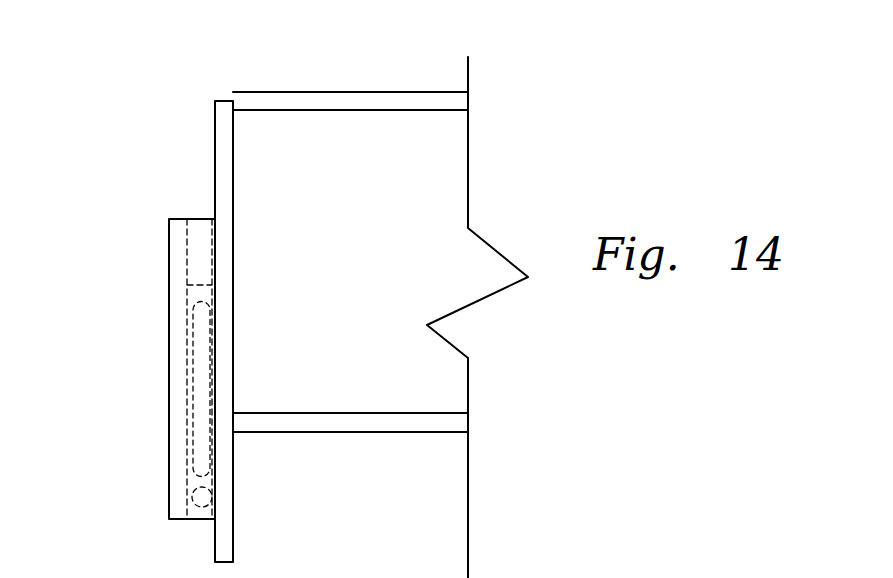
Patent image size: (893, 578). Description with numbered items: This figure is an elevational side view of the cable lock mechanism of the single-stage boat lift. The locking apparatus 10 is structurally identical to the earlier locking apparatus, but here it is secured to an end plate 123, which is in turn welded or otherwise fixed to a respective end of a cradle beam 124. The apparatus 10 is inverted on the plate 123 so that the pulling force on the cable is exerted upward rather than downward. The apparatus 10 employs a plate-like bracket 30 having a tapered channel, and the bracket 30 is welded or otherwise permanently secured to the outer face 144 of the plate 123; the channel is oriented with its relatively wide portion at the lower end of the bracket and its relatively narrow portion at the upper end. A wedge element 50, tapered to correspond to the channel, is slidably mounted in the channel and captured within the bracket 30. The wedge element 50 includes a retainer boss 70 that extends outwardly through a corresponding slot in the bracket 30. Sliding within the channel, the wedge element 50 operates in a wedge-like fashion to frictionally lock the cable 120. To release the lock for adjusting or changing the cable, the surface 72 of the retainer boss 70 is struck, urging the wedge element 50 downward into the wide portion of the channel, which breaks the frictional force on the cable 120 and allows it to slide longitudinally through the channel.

The locking apparatus 10 is at (169, 519).
The plate-like bracket 30 is at (168, 233).
The wedge element 50 is at (198, 302).
The retainer boss 70 is at (190, 424).
The surface 72 is at (193, 378).
The cable 120 is at (191, 495).
The end plate 123 is at (215, 127).
The cradle beam 124 is at (280, 107).
The outer face 144 is at (226, 157).